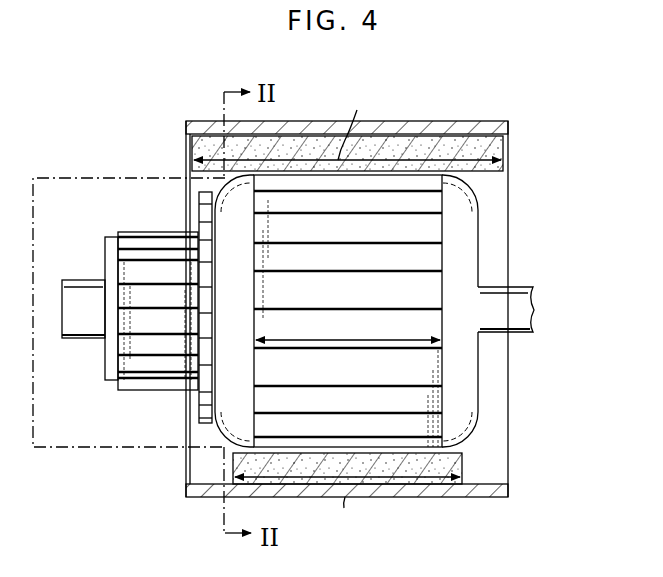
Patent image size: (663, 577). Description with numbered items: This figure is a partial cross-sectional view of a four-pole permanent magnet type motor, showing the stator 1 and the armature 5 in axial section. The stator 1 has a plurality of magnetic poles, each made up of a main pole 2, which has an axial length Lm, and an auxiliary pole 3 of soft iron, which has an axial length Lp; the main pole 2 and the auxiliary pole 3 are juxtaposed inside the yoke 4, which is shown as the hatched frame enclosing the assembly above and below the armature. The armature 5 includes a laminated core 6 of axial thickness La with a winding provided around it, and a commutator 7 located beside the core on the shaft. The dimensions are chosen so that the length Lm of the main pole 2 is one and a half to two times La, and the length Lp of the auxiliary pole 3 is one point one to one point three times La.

The stator 1 is at (205, 116).
The main pole 2 is at (503, 150).
The auxiliary pole 3 is at (462, 458).
The yoke 4 is at (466, 121).
The armature 5 is at (483, 403).
The laminated core 6 is at (425, 232).
The commutator 7 is at (150, 232).